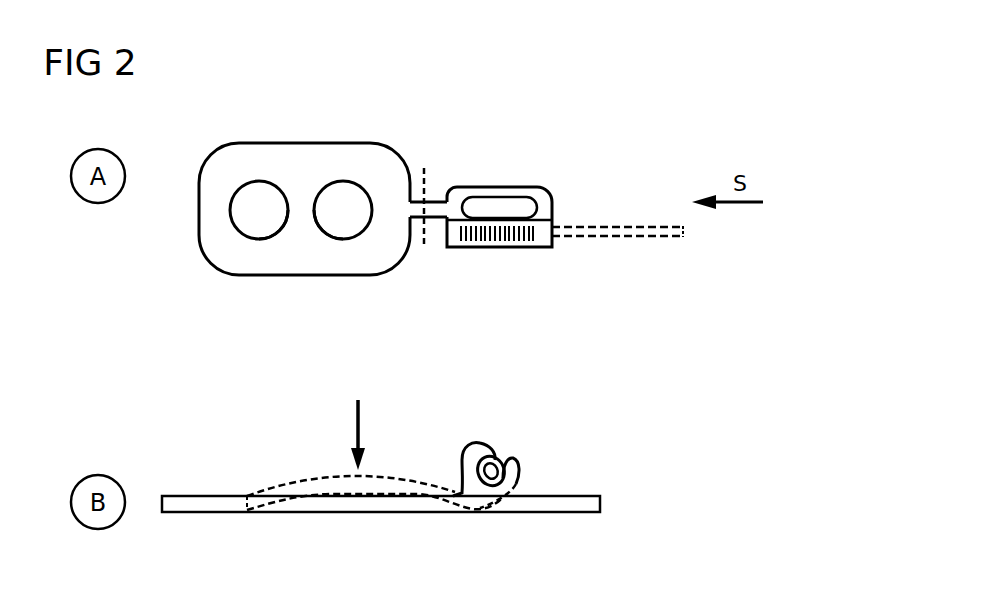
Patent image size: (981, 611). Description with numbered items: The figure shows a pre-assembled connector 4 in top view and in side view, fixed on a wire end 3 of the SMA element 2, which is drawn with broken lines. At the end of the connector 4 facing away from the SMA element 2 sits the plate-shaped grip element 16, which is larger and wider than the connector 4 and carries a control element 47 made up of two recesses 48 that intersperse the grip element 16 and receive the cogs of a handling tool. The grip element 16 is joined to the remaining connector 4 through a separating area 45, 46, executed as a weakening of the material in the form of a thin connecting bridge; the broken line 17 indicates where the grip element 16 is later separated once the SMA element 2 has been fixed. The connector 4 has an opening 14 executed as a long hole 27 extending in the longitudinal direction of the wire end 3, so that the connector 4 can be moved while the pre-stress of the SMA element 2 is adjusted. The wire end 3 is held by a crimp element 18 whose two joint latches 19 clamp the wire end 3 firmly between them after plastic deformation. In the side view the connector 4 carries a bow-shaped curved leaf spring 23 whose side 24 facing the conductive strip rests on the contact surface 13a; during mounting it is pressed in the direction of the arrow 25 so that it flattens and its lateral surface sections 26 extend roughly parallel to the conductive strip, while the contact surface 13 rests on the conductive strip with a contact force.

In FIG. 2A, the SMA element 2 is at (625, 217).
In FIG. 2A, the wire end 3 is at (560, 233).
In FIG. 2B, the wire end 3 is at (493, 467).
In FIG. 2A, the connector 4 is at (533, 189).
In FIG. 2A, the long hole 27 is at (542, 176).
In FIG. 2B, the contact surface 13 is at (602, 505).
In FIG. 2B, the contact surface 13a is at (298, 503).
In FIG. 2A, the opening 14 is at (498, 200).
In FIG. 2A, the grip element 16 is at (261, 162).
In FIG. 2B, the grip element 16 is at (405, 536).
In FIG. 2A, the broken line 17 is at (426, 178).
In FIG. 2A, the crimp element 18 is at (510, 235).
In FIG. 2B, the crimp element 18 is at (481, 500).
In FIG. 2B, the joint latches 19 is at (482, 453).
In FIG. 2B, the leaf spring 23 is at (298, 487).
In FIG. 2B, the side 24 is at (375, 538).
In FIG. 2B, the arrow 25 is at (355, 422).
In FIG. 2B, the lateral surface sections 26 is at (278, 505).
In FIG. 2A, the separating area 45 is at (432, 256).
In FIG. 2A, the neck 46 is at (434, 210).
In FIG. 2A, the control element 47 is at (337, 200).
In FIG. 2A, the recesses 48 is at (337, 222).